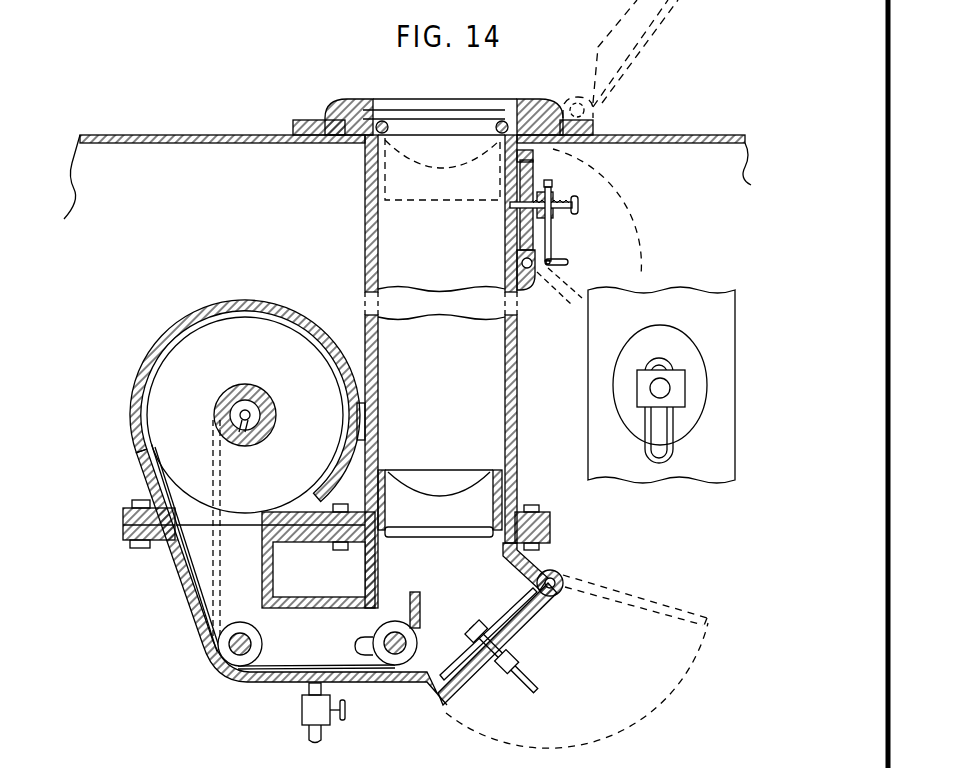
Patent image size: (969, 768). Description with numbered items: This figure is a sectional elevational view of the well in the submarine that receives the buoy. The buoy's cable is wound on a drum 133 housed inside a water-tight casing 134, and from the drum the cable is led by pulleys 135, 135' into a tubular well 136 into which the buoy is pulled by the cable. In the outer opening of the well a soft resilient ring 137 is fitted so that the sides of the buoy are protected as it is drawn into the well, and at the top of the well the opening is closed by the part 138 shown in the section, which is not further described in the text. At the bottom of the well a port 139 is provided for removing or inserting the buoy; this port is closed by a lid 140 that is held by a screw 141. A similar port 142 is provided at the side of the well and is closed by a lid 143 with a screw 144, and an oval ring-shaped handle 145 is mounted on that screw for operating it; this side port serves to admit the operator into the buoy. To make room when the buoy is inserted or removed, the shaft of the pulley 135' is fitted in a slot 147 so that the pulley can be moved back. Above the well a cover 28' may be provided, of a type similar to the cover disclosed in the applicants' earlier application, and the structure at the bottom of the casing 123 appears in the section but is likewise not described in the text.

The casing bottom wall 123 is at (296, 664).
The drum 133 is at (157, 413).
The water-tight casing 134 is at (148, 365).
The pulley 135 is at (258, 643).
The pulley 135' is at (440, 610).
The tubular well 136 is at (497, 450).
The soft resilient ring 137 is at (444, 130).
The cover 138 is at (478, 112).
The port 139 is at (455, 682).
The lid 140 is at (503, 607).
The screw 141 is at (507, 638).
The port 142 is at (507, 158).
The lid 143 is at (505, 192).
The screw 144 is at (556, 203).
The oval ring-shaped handle 145 is at (551, 247).
The slot 147 is at (360, 641).
The cover 28' is at (643, 59).